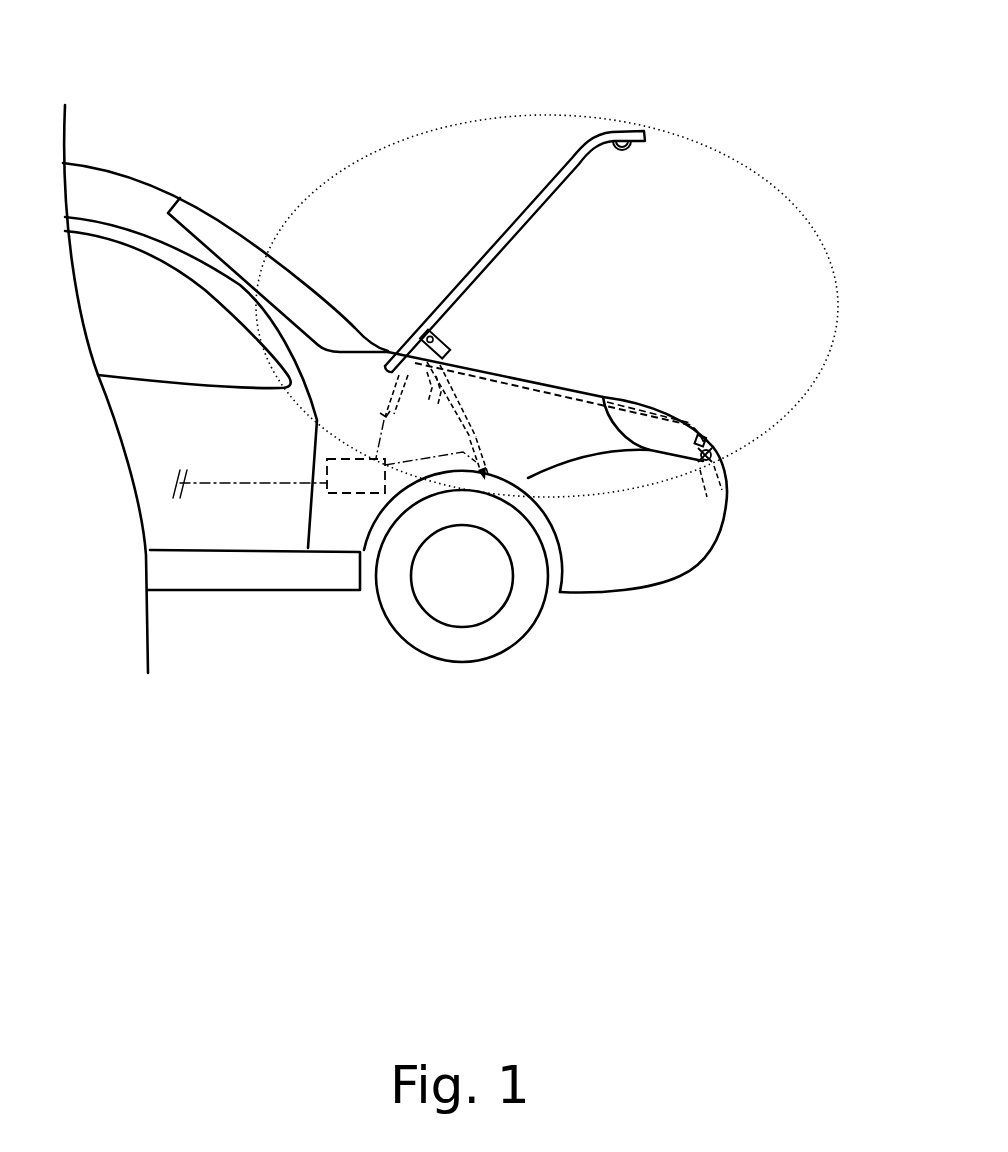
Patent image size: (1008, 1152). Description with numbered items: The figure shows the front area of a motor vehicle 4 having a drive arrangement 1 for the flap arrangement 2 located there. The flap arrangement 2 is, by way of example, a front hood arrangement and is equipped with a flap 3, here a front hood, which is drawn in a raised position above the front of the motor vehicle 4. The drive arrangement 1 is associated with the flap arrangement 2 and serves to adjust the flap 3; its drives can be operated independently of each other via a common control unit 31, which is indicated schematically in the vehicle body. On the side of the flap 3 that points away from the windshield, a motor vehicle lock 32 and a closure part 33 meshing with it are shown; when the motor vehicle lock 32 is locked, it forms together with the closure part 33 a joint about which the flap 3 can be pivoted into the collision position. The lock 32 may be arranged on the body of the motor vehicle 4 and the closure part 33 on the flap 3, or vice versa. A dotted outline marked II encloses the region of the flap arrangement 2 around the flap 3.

The drive arrangement 1 is at (413, 380).
The flap arrangement 2 is at (597, 253).
The flap 3 is at (538, 192).
The motor vehicle 4 is at (148, 195).
The control unit 31 is at (342, 494).
The motor vehicle lock 32 is at (727, 450).
The closure part 33 is at (638, 157).
The detail view marker II is at (732, 153).